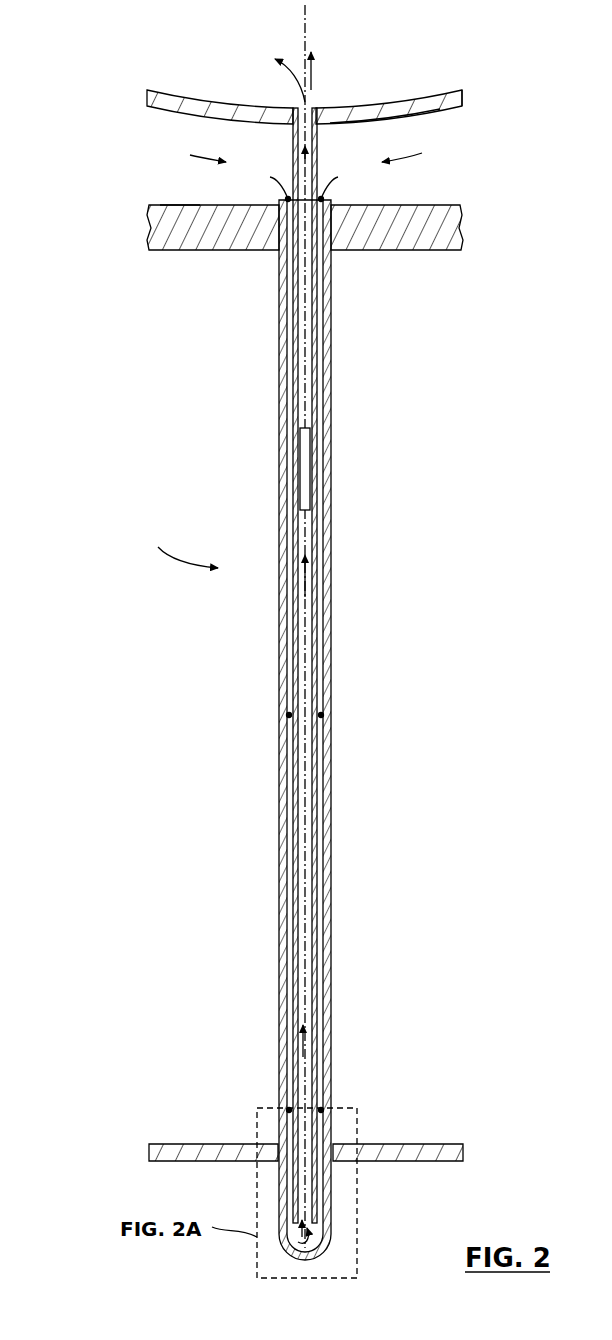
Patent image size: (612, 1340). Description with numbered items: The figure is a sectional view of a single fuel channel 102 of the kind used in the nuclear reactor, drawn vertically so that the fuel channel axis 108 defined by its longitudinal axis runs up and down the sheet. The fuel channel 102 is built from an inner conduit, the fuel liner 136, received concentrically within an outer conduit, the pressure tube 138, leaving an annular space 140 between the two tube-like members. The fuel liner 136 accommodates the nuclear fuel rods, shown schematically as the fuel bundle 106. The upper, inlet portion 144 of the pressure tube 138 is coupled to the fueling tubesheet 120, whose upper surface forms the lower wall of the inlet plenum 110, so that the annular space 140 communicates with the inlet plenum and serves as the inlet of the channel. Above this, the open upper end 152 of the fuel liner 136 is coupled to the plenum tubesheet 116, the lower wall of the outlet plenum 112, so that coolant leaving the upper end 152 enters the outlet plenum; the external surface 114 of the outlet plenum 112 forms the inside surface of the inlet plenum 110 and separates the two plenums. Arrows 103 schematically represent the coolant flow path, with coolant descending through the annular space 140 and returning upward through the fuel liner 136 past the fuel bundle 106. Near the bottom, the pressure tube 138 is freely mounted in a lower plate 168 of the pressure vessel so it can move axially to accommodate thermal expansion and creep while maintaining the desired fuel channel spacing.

The fuel channel 102 is at (176, 546).
The arrows 103 is at (205, 155).
The fuel bundle 106 is at (306, 466).
The fuel channel axis 108 is at (306, 28).
The inlet plenum 110 is at (167, 177).
The outlet plenum 112 is at (408, 68).
The external surface of outlet plenum 114 is at (412, 118).
The plenum tubesheet 116 is at (459, 90).
The fueling tubesheet 120 is at (397, 230).
The fuel liner 136 is at (317, 523).
The pressure tube 138 is at (328, 573).
The annular space 140 is at (283, 283).
The inlet portion 144 is at (325, 197).
The upper end 152 is at (293, 106).
The lower plate 168 is at (182, 1143).